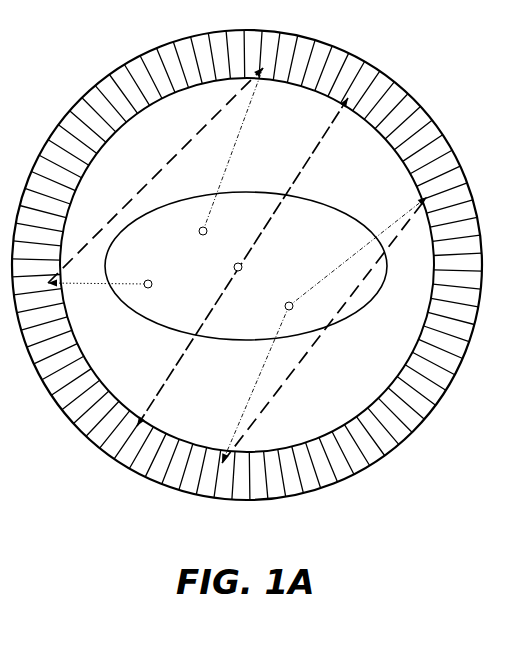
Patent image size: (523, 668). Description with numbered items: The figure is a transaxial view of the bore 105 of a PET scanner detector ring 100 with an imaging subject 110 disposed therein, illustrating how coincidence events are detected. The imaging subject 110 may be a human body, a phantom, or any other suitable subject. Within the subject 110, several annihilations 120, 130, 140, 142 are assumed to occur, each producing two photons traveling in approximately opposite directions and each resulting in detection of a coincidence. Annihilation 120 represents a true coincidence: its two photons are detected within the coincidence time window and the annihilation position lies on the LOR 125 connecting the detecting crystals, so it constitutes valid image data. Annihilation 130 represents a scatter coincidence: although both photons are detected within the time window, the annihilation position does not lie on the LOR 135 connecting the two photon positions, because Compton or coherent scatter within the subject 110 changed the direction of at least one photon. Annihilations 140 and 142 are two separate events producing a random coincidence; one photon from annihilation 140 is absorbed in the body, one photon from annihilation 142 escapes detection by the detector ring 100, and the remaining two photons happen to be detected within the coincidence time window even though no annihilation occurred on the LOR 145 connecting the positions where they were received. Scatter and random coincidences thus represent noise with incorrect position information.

The PET scanner detector ring 100 is at (321, 43).
The bore 105 is at (391, 363).
The imaging subject 110 is at (240, 190).
The annihilation 120 is at (242, 266).
The LOR 125 is at (307, 162).
The annihilation 130 is at (287, 303).
The LOR 135 is at (396, 236).
The annihilation 140 is at (207, 234).
The annihilation 142 is at (151, 282).
The LOR 145 is at (173, 158).